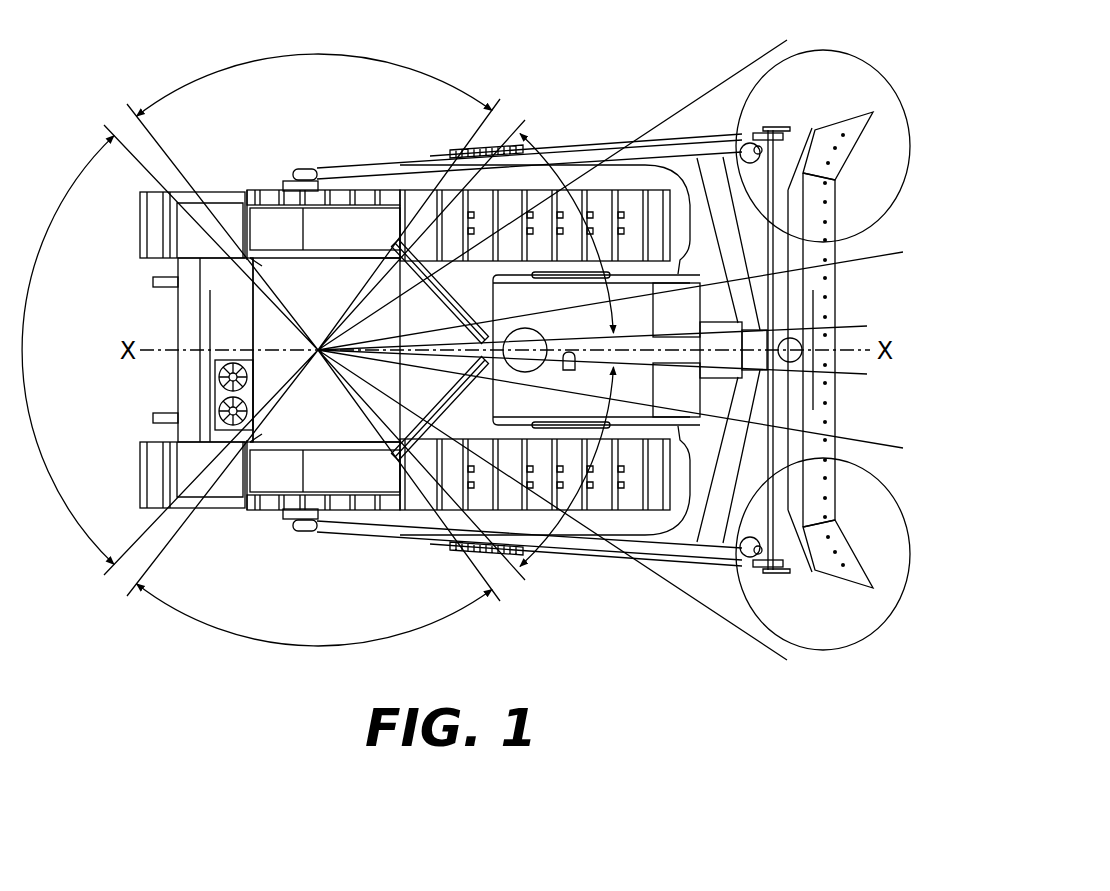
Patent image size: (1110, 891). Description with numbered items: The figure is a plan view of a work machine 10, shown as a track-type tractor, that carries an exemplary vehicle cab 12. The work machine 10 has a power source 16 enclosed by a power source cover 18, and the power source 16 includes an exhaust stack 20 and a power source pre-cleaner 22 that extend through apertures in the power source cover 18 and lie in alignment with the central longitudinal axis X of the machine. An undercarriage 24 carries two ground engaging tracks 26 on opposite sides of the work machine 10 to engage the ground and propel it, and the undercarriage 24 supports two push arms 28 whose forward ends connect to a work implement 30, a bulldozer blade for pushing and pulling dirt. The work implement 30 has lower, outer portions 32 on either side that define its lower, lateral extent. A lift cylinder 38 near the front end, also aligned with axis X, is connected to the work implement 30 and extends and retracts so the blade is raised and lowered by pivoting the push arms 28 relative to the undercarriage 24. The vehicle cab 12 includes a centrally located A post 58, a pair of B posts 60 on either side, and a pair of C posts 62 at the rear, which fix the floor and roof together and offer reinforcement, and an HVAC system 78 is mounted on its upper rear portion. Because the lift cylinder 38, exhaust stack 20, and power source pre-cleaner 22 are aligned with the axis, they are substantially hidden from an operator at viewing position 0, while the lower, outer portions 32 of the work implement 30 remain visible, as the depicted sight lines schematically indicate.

The work machine 10 is at (463, 72).
The vehicle cab 12 is at (329, 255).
The power source 16 is at (680, 275).
The power source cover 18 is at (673, 392).
The exhaust stack 20 is at (571, 371).
The power source pre-cleaner 22 is at (490, 310).
The undercarriage 24 is at (400, 170).
The ground engaging tracks 26 is at (140, 234).
The push arms 28 is at (567, 146).
The work implement 30 is at (832, 278).
The lower, outer portions 32 is at (852, 124).
The lift cylinder 38 is at (670, 333).
The A post 58 is at (447, 328).
The B posts 60 is at (358, 258).
The C posts 62 is at (252, 264).
The HVAC system 78 is at (220, 330).
The viewing position 0 is at (318, 347).